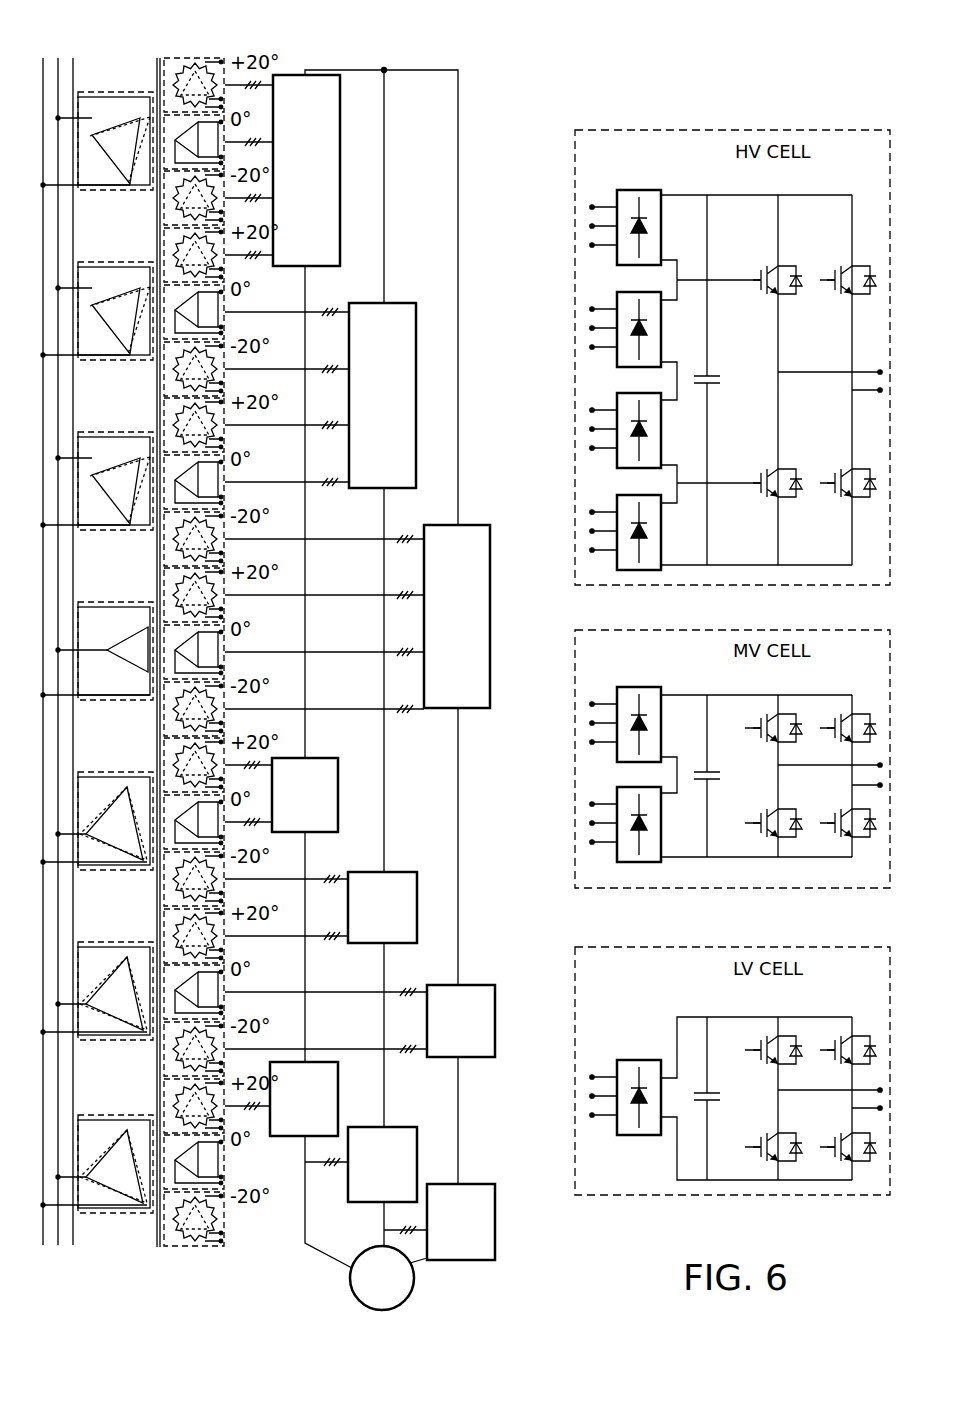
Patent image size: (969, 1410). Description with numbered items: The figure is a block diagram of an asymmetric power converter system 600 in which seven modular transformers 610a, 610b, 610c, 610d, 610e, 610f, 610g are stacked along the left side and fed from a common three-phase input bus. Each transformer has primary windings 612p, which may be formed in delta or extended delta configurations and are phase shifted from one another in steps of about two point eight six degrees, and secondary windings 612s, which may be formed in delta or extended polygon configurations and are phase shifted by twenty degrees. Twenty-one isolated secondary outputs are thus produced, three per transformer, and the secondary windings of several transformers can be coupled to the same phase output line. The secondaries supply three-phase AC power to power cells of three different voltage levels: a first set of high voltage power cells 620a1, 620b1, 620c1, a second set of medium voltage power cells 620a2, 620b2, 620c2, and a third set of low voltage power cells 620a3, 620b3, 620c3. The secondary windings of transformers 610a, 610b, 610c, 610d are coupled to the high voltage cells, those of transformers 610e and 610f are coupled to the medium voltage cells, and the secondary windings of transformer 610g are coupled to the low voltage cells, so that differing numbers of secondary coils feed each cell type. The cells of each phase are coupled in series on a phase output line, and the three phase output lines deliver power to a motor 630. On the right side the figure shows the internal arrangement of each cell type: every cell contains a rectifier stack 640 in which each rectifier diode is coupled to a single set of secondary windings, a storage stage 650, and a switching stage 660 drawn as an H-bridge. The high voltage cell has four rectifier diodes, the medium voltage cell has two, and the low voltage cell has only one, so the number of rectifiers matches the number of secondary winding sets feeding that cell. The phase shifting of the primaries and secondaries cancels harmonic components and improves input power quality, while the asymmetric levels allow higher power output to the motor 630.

The system 600 is at (100, 42).
The modular transformer 610a is at (97, 147).
The modular transformer 610b is at (138, 361).
The modular transformer 610c is at (138, 531).
The modular transformer 610d is at (118, 701).
The modular transformer 610e is at (118, 871).
The modular transformer 610f is at (118, 1041).
The modular transformer 610g is at (118, 1214).
The primary windings 612p is at (130, 190).
The secondary windings 612s is at (187, 57).
The high voltage power cell 620a1 is at (297, 73).
The high voltage power cell 620b1 is at (407, 301).
The high voltage power cell 620c1 is at (482, 523).
The medium voltage power cell 620a2 is at (325, 756).
The medium voltage power cell 620b2 is at (403, 870).
The medium voltage power cell 620c2 is at (485, 983).
The low voltage power cell 620a3 is at (325, 1060).
The low voltage power cell 620b3 is at (405, 1125).
The low voltage power cell 620c3 is at (485, 1183).
The motor 630 is at (414, 1288).
The rectifier stack 640 is at (640, 170).
The storage stage 650 is at (707, 170).
The switching stage 660 is at (815, 170).